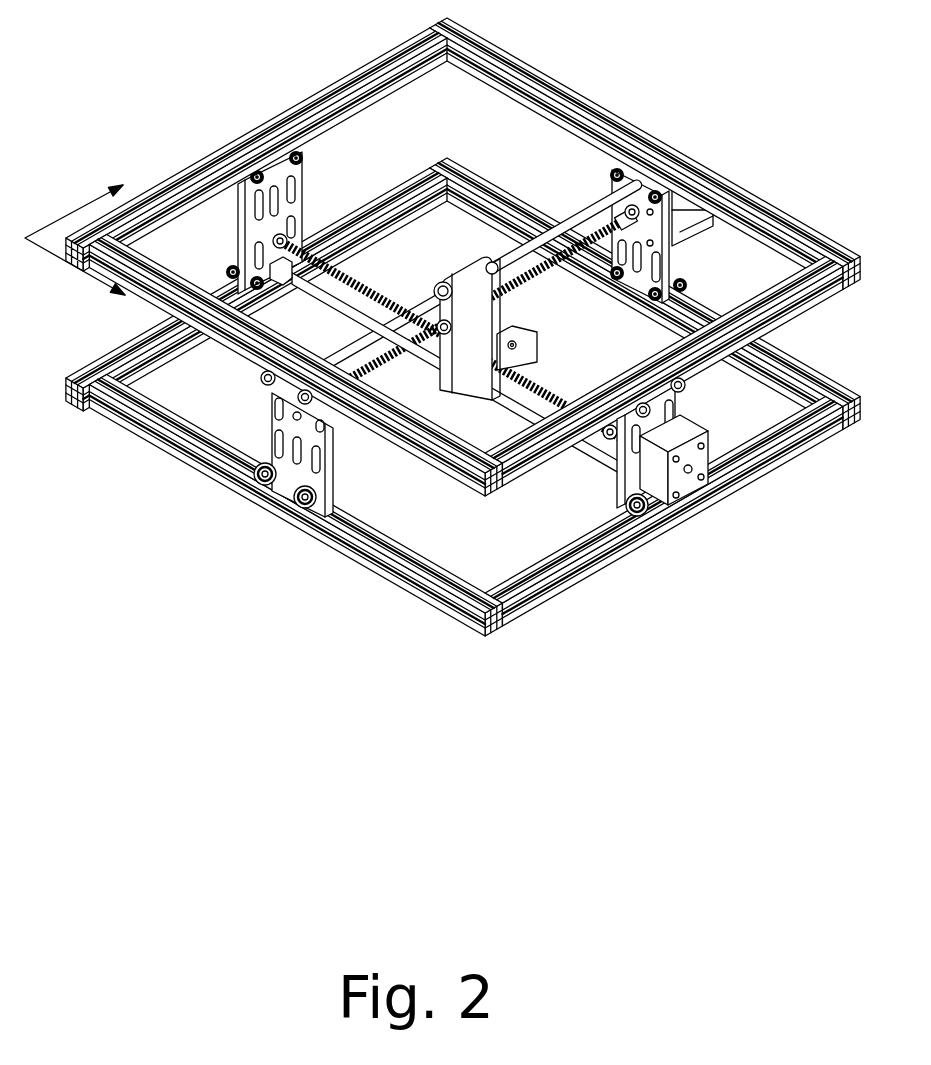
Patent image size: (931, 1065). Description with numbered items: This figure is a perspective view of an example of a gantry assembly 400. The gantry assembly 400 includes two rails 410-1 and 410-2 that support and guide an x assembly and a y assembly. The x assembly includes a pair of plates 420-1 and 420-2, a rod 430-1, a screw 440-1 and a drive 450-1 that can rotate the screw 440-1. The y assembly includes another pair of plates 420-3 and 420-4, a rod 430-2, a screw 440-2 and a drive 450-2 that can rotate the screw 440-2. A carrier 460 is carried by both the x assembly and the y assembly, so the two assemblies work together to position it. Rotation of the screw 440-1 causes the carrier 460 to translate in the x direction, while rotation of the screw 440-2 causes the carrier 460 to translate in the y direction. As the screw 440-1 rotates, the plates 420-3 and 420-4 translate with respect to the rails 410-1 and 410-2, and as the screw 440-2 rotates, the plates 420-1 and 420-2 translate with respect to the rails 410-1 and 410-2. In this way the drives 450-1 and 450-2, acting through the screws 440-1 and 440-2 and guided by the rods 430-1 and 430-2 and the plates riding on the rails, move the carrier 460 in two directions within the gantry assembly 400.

The gantry assembly 400 is at (273, 73).
The rail 410-1 is at (410, 40).
The rail 410-2 is at (400, 590).
The plate 420-1 is at (609, 188).
The plate 420-2 is at (333, 466).
The plate 420-3 is at (676, 422).
The plate 420-4 is at (306, 176).
The rod 430-1 is at (517, 250).
The rod 430-2 is at (598, 466).
The screw 440-1 is at (543, 283).
The screw 440-2 is at (363, 277).
The drive 450-1 is at (683, 218).
The drive 450-2 is at (688, 493).
The carrier 460 is at (487, 327).